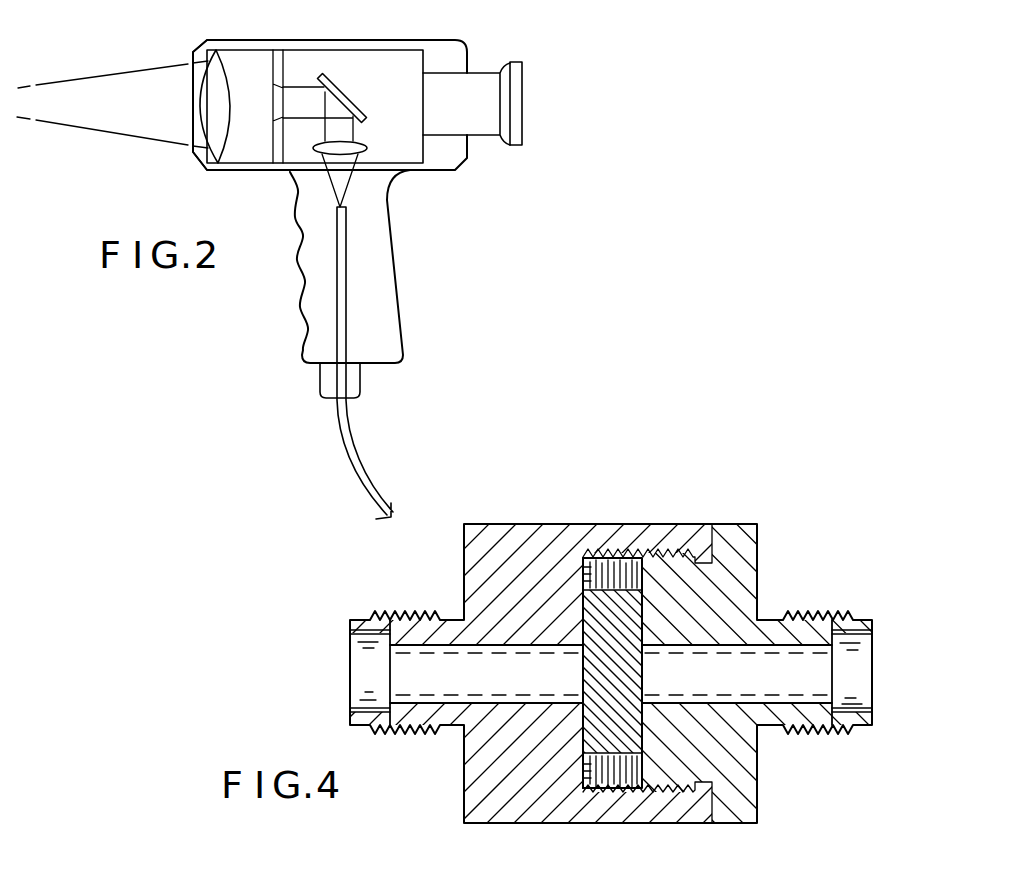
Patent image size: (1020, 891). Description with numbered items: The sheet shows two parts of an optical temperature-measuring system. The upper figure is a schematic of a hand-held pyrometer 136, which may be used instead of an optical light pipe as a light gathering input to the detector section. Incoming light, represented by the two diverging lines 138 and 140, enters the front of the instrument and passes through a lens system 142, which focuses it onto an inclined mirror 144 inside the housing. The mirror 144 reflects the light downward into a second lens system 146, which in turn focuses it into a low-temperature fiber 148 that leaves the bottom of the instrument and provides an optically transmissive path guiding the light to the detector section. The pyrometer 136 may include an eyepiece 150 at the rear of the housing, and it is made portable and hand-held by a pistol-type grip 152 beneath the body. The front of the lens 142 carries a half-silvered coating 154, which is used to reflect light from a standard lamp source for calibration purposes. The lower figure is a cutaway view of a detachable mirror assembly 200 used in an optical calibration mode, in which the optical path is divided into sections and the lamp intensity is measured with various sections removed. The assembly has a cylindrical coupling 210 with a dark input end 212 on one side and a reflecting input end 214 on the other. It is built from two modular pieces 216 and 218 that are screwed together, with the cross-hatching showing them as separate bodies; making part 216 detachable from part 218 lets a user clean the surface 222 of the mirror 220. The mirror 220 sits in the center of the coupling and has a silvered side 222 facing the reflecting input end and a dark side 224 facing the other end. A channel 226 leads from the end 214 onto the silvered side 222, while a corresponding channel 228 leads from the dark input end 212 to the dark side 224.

In FIG. 2, the pyrometer 136 is at (455, 210).
In FIG. 2, the line 138 is at (83, 77).
In FIG. 2, the line 140 is at (94, 132).
In FIG. 2, the lens system 142 is at (230, 72).
In FIG. 2, the mirror 144 is at (343, 79).
In FIG. 2, the second lens system 146 is at (366, 145).
In FIG. 2, the low-temperature fiber 148 is at (350, 442).
In FIG. 2, the eyepiece 150 is at (495, 70).
In FIG. 2, the pistol-type grip 152 is at (403, 313).
In FIG. 2, the half-silvered coating 154 is at (210, 61).
In FIG. 4, the detachable mirror assembly 200 is at (722, 497).
In FIG. 4, the cylindrical coupling 210 is at (521, 524).
In FIG. 4, the dark input end 212 is at (367, 682).
In FIG. 4, the reflecting input end 214 is at (860, 686).
In FIG. 4, the modular piece 216 is at (745, 795).
In FIG. 4, the modular piece 218 is at (477, 795).
In FIG. 4, the mirror 220 is at (609, 607).
In FIG. 4, the silvered side 222 is at (645, 611).
In FIG. 4, the dark side 224 is at (583, 617).
In FIG. 4, the channel 226 is at (800, 647).
In FIG. 4, the channel 228 is at (424, 646).